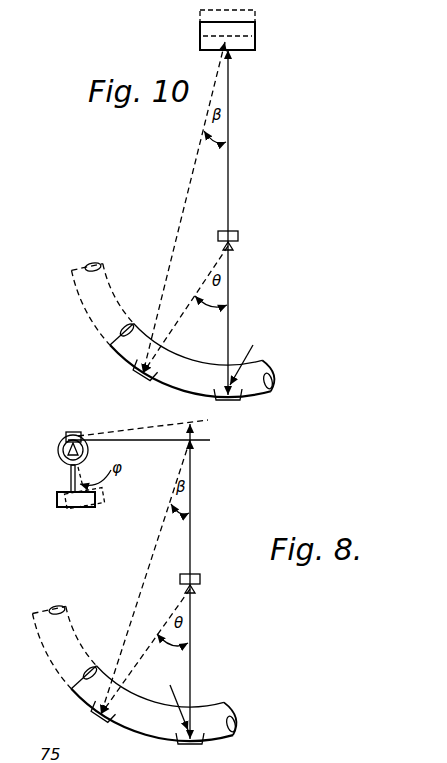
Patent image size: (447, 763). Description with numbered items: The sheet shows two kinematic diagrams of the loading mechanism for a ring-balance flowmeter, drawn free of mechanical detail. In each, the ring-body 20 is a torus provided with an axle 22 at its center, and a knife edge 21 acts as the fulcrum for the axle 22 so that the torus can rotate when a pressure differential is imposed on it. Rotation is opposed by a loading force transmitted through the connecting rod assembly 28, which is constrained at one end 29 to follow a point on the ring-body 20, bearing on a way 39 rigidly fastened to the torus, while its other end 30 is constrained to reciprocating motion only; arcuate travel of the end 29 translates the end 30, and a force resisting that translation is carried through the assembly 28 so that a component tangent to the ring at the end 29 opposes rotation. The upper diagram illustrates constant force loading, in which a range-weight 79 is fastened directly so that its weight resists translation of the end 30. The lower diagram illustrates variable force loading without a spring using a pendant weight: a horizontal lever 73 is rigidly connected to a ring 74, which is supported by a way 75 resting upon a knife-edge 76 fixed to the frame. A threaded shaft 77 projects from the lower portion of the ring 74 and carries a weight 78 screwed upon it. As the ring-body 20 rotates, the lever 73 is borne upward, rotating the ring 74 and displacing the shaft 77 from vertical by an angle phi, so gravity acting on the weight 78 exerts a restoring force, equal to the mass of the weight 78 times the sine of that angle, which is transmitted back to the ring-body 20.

In FIG. 10, the ring-body 20 is at (113, 297).
In FIG. 8, the ring-body 20 is at (73, 638).
In FIG. 10, the knife edge 21 is at (233, 247).
In FIG. 8, the knife edge 21 is at (196, 590).
In FIG. 10, the axle 22 is at (240, 231).
In FIG. 8, the axle 22 is at (200, 573).
In FIG. 10, the connecting rod assembly 28 is at (180, 219).
In FIG. 8, the connecting rod assembly 28 is at (152, 547).
In FIG. 10, the end of connecting rod assembly 29 is at (250, 355).
In FIG. 8, the end of connecting rod assembly 29 is at (167, 698).
In FIG. 10, the other end of connecting rod assembly 30 is at (230, 60).
In FIG. 8, the other end of connecting rod assembly 30 is at (192, 446).
In FIG. 10, the way 39 is at (243, 402).
In FIG. 8, the way 39 is at (205, 745).
In FIG. 8, the horizontal lever 73 is at (137, 428).
In FIG. 8, the ring 74 is at (58, 450).
In FIG. 8, the way 75 is at (73, 432).
In FIG. 8, the knife-edge 76 is at (80, 446).
In FIG. 8, the threaded shaft 77 is at (70, 480).
In FIG. 8, the weight 78 is at (55, 508).
In FIG. 10, the range-weight 79 is at (255, 37).